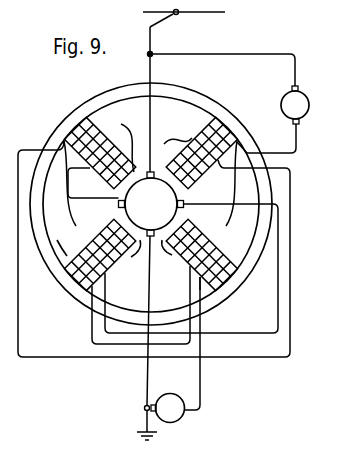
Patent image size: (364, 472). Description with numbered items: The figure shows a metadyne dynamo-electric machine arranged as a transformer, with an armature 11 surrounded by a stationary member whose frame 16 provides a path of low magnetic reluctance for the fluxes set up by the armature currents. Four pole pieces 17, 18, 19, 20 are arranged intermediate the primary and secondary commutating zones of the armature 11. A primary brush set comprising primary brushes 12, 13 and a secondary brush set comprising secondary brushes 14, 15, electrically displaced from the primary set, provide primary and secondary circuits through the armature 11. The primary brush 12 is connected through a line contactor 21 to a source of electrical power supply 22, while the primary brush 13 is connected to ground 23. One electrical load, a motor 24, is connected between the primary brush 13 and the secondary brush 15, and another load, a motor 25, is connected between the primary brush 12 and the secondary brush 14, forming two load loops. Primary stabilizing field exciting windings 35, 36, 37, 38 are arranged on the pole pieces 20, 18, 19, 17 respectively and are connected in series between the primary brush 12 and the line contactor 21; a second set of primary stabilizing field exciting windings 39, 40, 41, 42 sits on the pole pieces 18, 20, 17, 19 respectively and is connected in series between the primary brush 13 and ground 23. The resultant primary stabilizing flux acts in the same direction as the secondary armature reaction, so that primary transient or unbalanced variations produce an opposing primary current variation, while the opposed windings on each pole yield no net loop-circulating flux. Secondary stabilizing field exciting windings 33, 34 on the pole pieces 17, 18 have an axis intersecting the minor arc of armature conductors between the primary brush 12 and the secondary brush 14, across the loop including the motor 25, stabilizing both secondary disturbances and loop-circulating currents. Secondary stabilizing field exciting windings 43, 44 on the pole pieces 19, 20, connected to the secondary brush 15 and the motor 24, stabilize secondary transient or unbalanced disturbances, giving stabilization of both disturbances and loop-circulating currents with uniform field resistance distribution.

The armature 11 is at (121, 199).
The primary brush 12 is at (153, 170).
The primary brush 13 is at (148, 236).
The secondary brush 14 is at (185, 205).
The secondary brush 15 is at (119, 207).
The frame 16 is at (250, 271).
The pole piece 17 is at (230, 164).
The pole piece 18 is at (105, 274).
The pole piece 19 is at (189, 271).
The pole piece 20 is at (109, 128).
The line contactor 21 is at (163, 24).
The source of electrical power supply 22 is at (195, 14).
The ground 23 is at (145, 425).
The motor 24 is at (179, 421).
The motor 25 is at (309, 105).
The secondary stabilizing field exciting winding 33 is at (209, 122).
The secondary stabilizing field exciting winding 34 is at (70, 255).
The primary stabilizing field exciting winding 35 is at (137, 160).
The primary stabilizing field exciting winding 36 is at (103, 220).
The primary stabilizing field exciting winding 37 is at (175, 257).
The primary stabilizing field exciting winding 38 is at (198, 185).
The primary stabilizing field exciting winding 39 is at (117, 258).
The primary stabilizing field exciting winding 40 is at (97, 167).
The primary stabilizing field exciting winding 41 is at (191, 140).
The primary stabilizing field exciting winding 42 is at (213, 243).
The secondary stabilizing field exciting winding 43 is at (228, 257).
The secondary stabilizing field exciting winding 44 is at (70, 148).